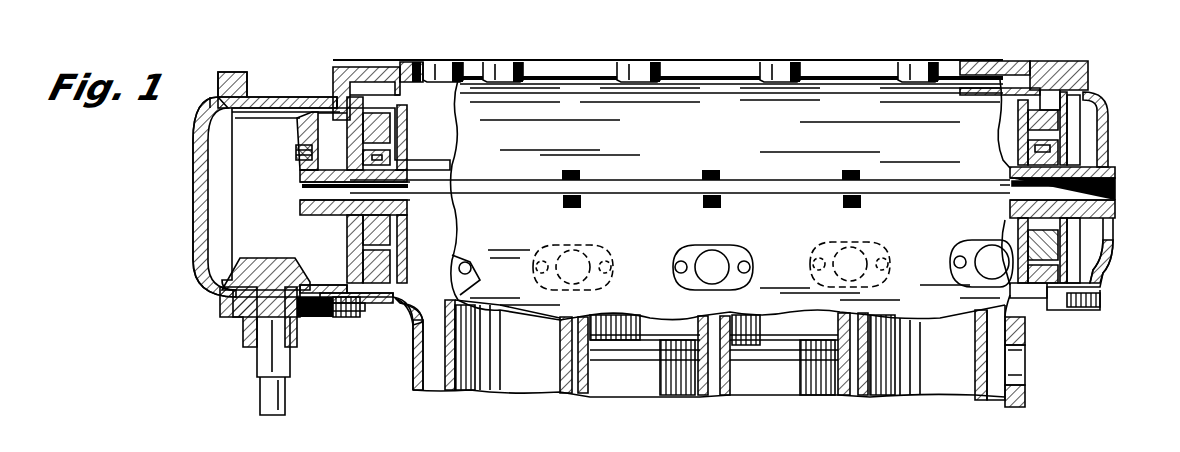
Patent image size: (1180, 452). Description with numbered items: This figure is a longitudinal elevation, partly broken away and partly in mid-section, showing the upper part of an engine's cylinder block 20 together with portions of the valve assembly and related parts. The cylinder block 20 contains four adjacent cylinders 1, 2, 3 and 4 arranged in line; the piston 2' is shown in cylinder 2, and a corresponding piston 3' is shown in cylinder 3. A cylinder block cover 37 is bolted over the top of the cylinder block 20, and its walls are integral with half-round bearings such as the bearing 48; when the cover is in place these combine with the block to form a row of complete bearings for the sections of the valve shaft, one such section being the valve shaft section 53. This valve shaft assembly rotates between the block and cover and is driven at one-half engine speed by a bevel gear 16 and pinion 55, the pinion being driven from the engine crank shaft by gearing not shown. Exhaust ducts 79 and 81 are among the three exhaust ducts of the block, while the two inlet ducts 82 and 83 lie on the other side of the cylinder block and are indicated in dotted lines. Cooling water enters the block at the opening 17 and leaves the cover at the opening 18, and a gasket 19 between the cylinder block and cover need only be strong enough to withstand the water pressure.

The cylinder 1 is at (528, 375).
The cylinder 2 is at (630, 374).
The piston 2' is at (695, 377).
The cylinder 3 is at (799, 373).
The third cylinder liner 3' is at (817, 389).
The cylinder 4 is at (940, 375).
The bevel gear 16 is at (300, 145).
The opening 17 is at (1022, 375).
The opening 18 is at (432, 66).
The gasket 19 is at (650, 195).
The cylinder block 20 is at (410, 350).
The cylinder block cover 37 is at (993, 60).
The half-round bearing 48 is at (300, 180).
The valve shaft section 53 is at (1112, 170).
The pinion 55 is at (265, 258).
The exhaust duct 79 is at (705, 255).
The exhaust duct 81 is at (982, 250).
The inlet duct 82 is at (552, 250).
The inlet duct 83 is at (840, 250).